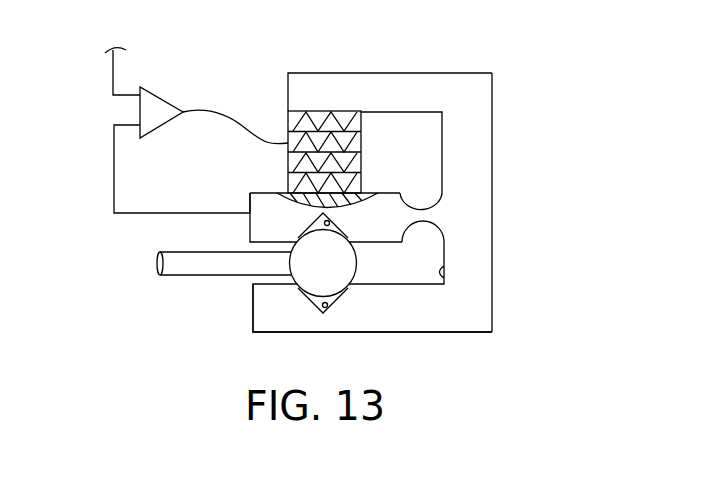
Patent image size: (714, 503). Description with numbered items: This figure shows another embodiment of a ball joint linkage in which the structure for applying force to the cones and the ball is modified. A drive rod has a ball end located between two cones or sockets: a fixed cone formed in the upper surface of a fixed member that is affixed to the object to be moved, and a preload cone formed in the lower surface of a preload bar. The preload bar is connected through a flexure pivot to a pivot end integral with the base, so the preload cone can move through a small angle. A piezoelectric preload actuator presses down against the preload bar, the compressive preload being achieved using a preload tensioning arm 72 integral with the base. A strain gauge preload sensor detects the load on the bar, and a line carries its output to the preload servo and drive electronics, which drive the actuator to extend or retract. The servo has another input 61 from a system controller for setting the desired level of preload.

The input 61 is at (120, 76).
The preload tensioning arm 72 is at (334, 85).